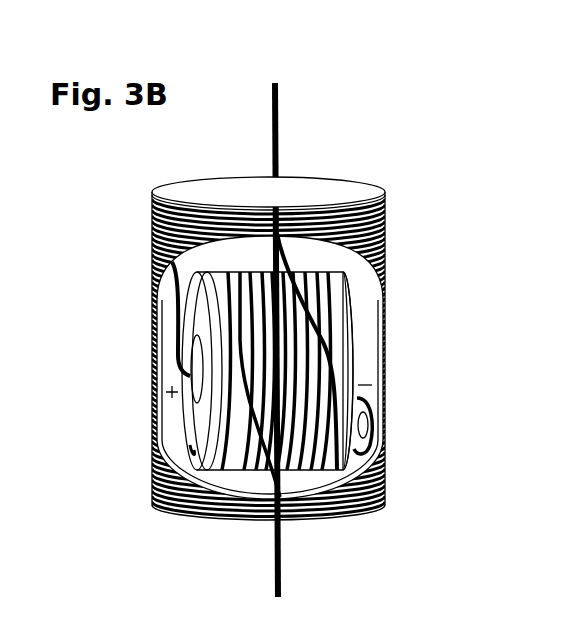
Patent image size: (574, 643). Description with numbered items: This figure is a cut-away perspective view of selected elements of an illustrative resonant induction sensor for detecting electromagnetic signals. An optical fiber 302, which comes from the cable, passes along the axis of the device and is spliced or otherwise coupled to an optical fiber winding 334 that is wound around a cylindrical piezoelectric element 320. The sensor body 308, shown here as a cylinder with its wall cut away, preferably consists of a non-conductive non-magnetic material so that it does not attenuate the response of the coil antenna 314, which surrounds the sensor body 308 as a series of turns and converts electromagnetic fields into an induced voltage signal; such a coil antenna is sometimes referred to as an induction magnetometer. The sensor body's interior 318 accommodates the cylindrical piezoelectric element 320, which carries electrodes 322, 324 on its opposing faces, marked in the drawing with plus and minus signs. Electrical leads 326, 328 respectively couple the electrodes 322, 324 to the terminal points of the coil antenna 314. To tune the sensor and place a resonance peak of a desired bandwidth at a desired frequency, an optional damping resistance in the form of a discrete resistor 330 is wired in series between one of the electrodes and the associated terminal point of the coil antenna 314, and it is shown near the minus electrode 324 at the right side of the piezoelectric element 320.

The optical fiber 302 is at (272, 150).
The sensor body 308 is at (357, 185).
The coil antenna 314 is at (151, 220).
The sensor body interior 318 is at (363, 295).
The cylindrical piezoelectric element 320 is at (330, 285).
The electrode 322 is at (190, 421).
The electrode 324 is at (357, 368).
The electrical lead 326 is at (172, 325).
The electrical lead 328 is at (365, 405).
The discrete resistor 330 is at (360, 432).
The optical fiber winding 334 is at (278, 272).